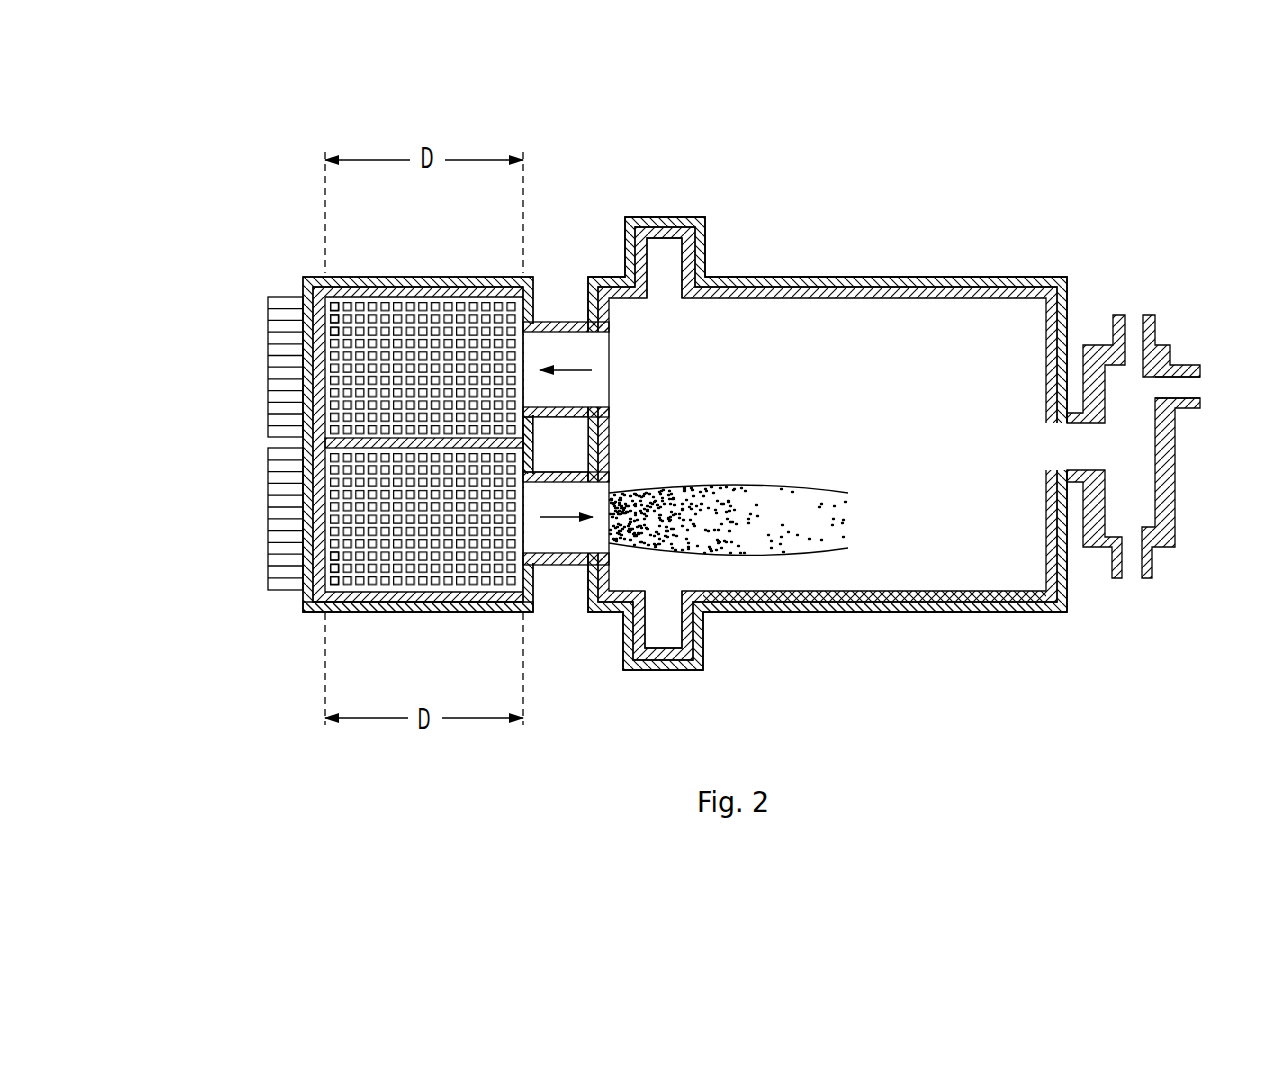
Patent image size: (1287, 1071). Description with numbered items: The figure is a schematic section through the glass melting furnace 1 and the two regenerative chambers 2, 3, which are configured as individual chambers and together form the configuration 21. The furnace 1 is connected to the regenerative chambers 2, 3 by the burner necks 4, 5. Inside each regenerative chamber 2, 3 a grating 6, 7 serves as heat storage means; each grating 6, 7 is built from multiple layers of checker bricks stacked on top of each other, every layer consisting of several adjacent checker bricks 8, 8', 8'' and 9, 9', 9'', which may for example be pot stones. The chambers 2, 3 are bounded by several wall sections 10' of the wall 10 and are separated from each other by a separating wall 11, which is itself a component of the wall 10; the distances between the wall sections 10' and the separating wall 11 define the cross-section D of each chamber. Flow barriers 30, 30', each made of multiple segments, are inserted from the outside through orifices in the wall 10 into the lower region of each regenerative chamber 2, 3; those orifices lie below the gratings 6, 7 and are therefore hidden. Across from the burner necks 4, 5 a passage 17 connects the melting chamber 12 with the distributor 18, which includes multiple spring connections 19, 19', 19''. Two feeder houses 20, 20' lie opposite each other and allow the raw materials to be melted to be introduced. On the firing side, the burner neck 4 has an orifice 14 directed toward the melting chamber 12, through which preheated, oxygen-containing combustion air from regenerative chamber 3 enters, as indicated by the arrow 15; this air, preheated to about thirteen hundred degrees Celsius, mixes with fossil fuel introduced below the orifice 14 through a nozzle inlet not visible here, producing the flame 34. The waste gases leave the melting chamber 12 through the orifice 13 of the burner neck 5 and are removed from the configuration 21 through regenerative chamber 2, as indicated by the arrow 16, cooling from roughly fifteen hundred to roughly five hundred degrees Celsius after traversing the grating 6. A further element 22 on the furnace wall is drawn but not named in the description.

The glass melting furnace 1 is at (903, 266).
The regenerative chamber 2 is at (450, 272).
The regenerative chamber 3 is at (486, 617).
The burner neck 4 is at (575, 566).
The burner neck 5 is at (548, 346).
The grating 6 is at (415, 300).
The grating 7 is at (415, 567).
The checker brick 8 is at (285, 537).
The checker brick 8' is at (281, 564).
The checker brick 8'' is at (282, 602).
The checker brick 9 is at (285, 351).
The checker brick 9' is at (281, 323).
The checker brick 9'' is at (283, 286).
The wall 10 is at (418, 401).
The wall section 10' is at (418, 445).
The separating wall 11 is at (325, 443).
The melting chamber 12 is at (783, 288).
The orifice 13 is at (609, 355).
The orifice 14 is at (610, 490).
The arrow 15 is at (550, 520).
The arrow 16 is at (576, 368).
The passage 17 is at (1072, 411).
The distributor 18 is at (1134, 502).
The spring connection 19 is at (1106, 557).
The spring connection 19' is at (1179, 348).
The spring connection 19'' is at (1162, 313).
The feeder house 20 is at (664, 236).
The feeder house 20' is at (663, 657).
The configuration 21 is at (836, 172).
The chamber wall 22 is at (938, 560).
The flow barrier 30 is at (240, 367).
The flow barrier 30' is at (240, 519).
The flame 34 is at (743, 527).